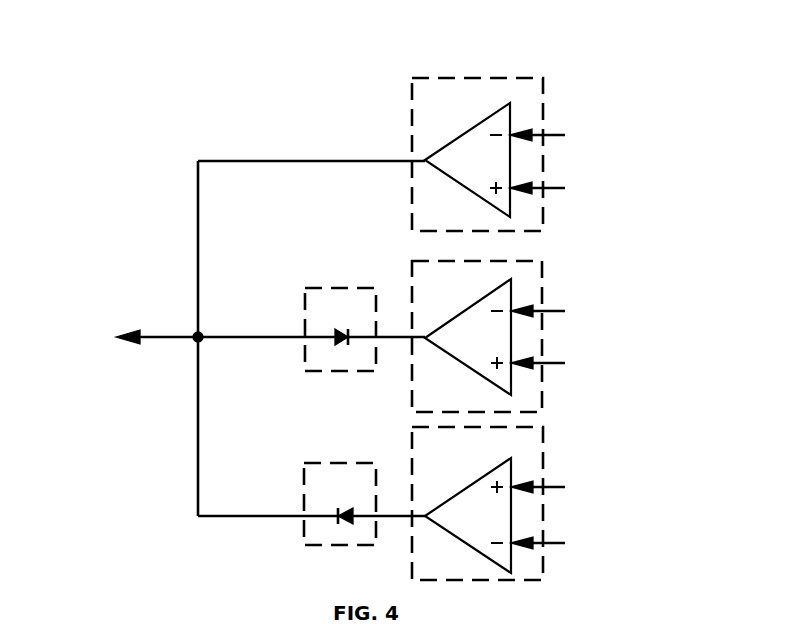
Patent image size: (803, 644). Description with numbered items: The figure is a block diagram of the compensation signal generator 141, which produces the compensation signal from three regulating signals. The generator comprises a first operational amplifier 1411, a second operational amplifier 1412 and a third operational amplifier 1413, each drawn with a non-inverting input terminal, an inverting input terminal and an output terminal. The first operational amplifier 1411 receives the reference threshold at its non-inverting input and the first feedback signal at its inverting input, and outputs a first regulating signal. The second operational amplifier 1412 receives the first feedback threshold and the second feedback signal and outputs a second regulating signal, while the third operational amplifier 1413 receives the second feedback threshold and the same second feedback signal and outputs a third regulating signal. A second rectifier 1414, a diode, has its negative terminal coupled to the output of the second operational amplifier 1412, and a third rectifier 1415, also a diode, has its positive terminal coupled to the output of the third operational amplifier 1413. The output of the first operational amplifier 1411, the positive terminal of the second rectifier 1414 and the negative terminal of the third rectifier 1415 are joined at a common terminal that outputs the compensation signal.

The compensation signal generator 141 is at (637, 40).
The first operational amplifier 1411 is at (413, 115).
The second operational amplifier 1412 is at (412, 270).
The third operational amplifier 1413 is at (412, 436).
The second rectifier 1414 is at (305, 303).
The third rectifier 1415 is at (305, 475).